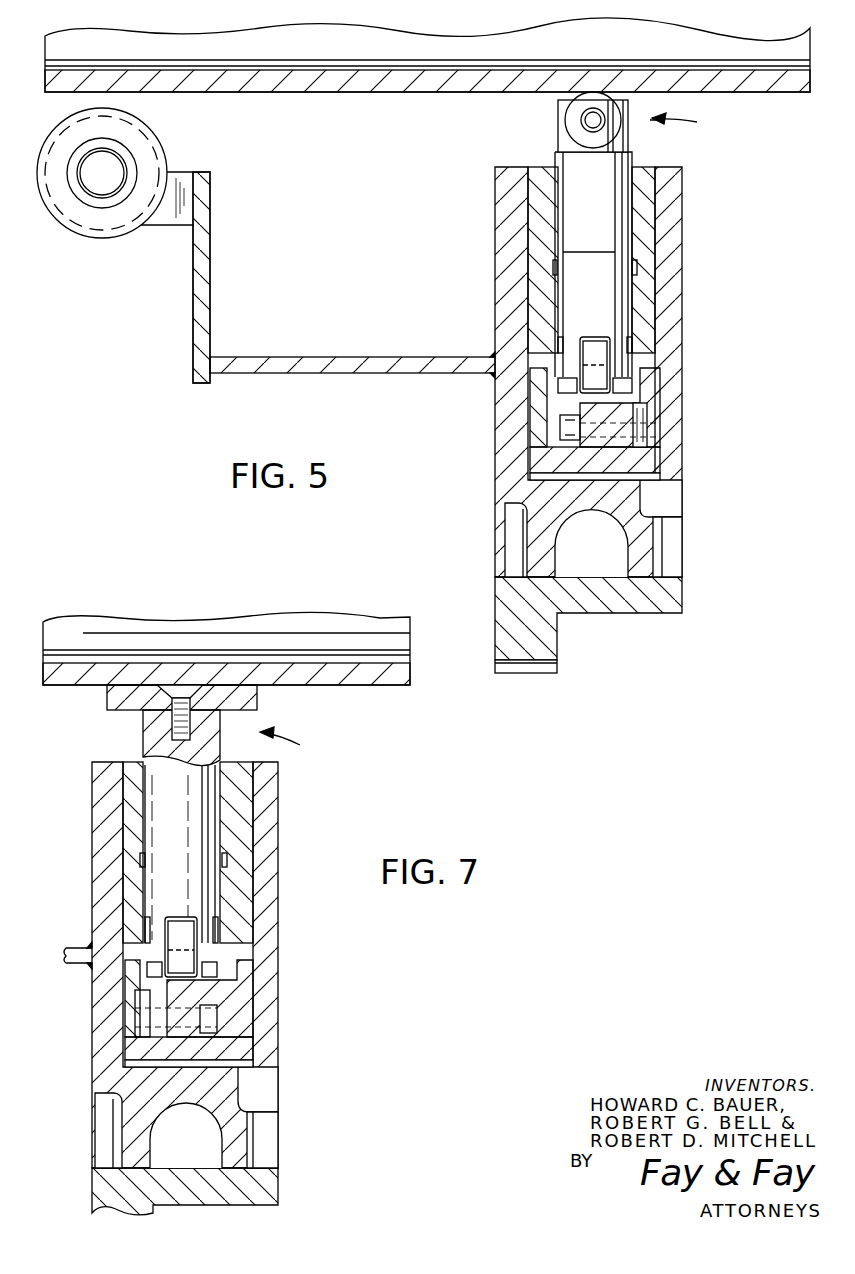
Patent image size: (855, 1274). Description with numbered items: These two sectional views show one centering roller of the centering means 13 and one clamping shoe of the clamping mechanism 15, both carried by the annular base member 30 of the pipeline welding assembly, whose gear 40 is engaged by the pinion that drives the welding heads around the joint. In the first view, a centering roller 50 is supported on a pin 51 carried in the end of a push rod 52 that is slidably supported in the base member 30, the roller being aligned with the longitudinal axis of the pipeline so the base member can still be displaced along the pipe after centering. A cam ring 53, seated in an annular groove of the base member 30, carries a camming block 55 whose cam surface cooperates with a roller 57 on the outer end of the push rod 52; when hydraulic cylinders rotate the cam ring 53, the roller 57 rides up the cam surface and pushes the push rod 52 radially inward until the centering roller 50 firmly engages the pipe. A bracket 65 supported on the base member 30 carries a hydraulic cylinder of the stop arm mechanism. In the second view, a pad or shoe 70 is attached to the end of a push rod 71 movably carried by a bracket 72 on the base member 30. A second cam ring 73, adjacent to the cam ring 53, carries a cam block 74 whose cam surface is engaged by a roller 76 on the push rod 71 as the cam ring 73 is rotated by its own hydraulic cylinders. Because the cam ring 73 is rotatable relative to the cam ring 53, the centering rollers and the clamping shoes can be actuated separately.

In FIG. 5, the centering means 13 is at (688, 124).
In FIG. 7, the clamping mechanism 15 is at (296, 743).
In FIG. 5, the annular base member 30 is at (495, 236).
In FIG. 7, the annular base member 30 is at (92, 807).
In FIG. 5, the gear 40 is at (538, 668).
In FIG. 5, the centering roller 50 is at (590, 97).
In FIG. 5, the pin 51 is at (585, 118).
In FIG. 5, the push rod 52 is at (623, 193).
In FIG. 5, the cam ring 53 is at (660, 383).
In FIG. 7, the cam ring 53 is at (250, 1037).
In FIG. 5, the camming block 55 is at (645, 415).
In FIG. 5, the roller 57 is at (598, 345).
In FIG. 5, the bracket 65 is at (388, 373).
In FIG. 7, the bracket 65 is at (75, 953).
In FIG. 7, the clamping shoe 70 is at (252, 700).
In FIG. 7, the push rod 71 is at (148, 737).
In FIG. 7, the bracket 72 is at (240, 800).
In FIG. 5, the second cam ring 73 is at (532, 467).
In FIG. 7, the second cam ring 73 is at (135, 1053).
In FIG. 7, the cam block 74 is at (150, 1020).
In FIG. 7, the roller 76 is at (185, 920).